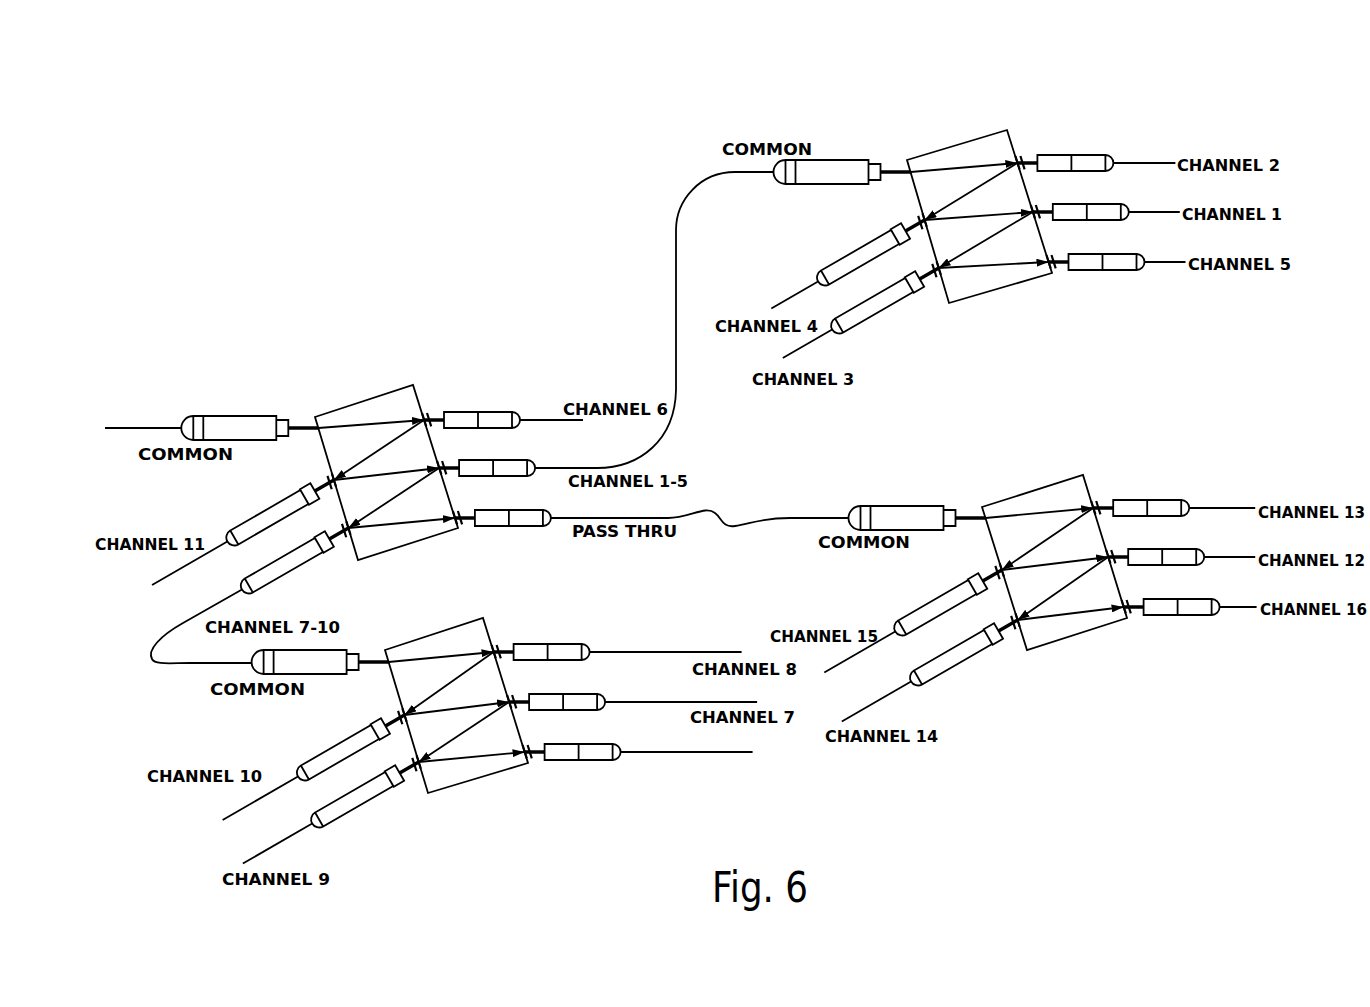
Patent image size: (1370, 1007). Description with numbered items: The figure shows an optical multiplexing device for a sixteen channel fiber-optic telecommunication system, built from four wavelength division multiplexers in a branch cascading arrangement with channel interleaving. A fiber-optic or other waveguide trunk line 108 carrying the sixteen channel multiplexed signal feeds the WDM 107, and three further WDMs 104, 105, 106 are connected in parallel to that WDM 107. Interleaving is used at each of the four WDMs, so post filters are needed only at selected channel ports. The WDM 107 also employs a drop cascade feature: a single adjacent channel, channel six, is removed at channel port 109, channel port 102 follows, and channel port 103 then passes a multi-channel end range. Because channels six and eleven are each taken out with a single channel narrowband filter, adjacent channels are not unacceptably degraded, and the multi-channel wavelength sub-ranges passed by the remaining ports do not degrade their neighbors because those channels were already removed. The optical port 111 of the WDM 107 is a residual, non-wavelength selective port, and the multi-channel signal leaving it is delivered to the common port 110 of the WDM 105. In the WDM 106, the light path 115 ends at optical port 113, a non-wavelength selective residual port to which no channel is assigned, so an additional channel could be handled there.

The channel port 102 is at (336, 477).
The channel port 103 is at (437, 469).
The WDM 104 is at (965, 131).
The WDM 105 is at (1046, 476).
The WDM 106 is at (456, 618).
The WDM 107 is at (377, 382).
The trunk line 108 is at (138, 433).
The channel port 109 is at (414, 400).
The common port 110 is at (978, 522).
The optical port 111 is at (452, 516).
The optical port 113 is at (503, 756).
The light path 115 is at (407, 661).